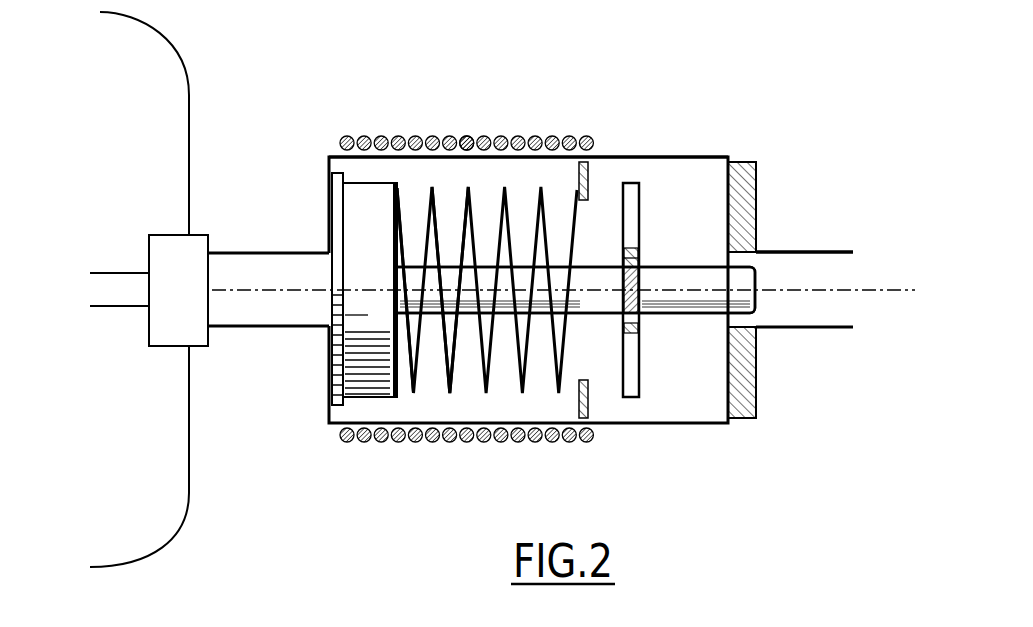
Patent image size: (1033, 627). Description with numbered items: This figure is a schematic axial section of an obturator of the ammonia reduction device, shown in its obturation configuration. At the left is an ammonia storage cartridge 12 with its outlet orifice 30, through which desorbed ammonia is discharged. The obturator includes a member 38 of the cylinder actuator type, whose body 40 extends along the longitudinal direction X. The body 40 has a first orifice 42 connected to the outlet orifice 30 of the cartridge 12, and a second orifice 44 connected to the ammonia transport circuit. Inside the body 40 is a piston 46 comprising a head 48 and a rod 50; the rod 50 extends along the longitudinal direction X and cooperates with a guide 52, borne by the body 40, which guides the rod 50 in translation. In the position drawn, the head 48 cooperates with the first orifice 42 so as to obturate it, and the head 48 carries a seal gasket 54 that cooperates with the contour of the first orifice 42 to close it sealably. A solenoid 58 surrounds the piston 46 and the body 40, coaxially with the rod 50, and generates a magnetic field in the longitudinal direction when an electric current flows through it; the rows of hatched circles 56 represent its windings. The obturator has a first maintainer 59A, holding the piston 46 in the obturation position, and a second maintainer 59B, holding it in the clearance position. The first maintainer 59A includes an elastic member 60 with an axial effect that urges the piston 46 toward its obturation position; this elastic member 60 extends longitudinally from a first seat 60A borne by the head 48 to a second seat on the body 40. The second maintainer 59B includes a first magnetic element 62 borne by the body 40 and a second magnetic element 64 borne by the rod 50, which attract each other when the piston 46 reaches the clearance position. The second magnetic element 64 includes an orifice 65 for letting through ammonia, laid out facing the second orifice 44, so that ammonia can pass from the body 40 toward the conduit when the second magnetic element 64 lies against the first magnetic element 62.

The ammonia storage cartridge 12 is at (196, 86).
The outlet orifice 30 is at (236, 246).
The member of the cylinder actuator type 38 is at (712, 134).
The body 40 is at (667, 156).
The first orifice 42 is at (319, 241).
The second orifice 44 is at (774, 240).
The piston 46 is at (608, 322).
The head 48 is at (378, 390).
The rod 50 is at (681, 303).
The guide 52 is at (744, 320).
The seal gasket 54 is at (328, 370).
The bearing 56 is at (528, 126).
The solenoid 58 is at (468, 138).
The first maintainer 59A is at (850, 238).
The second maintainer 59B is at (448, 408).
The elastic member 60 is at (488, 368).
The first seat 60A is at (398, 195).
The first magnetic element 62 is at (753, 177).
The second magnetic element 64 is at (631, 212).
The orifice for letting through ammonia 65 is at (636, 262).
The longitudinal direction X is at (872, 288).